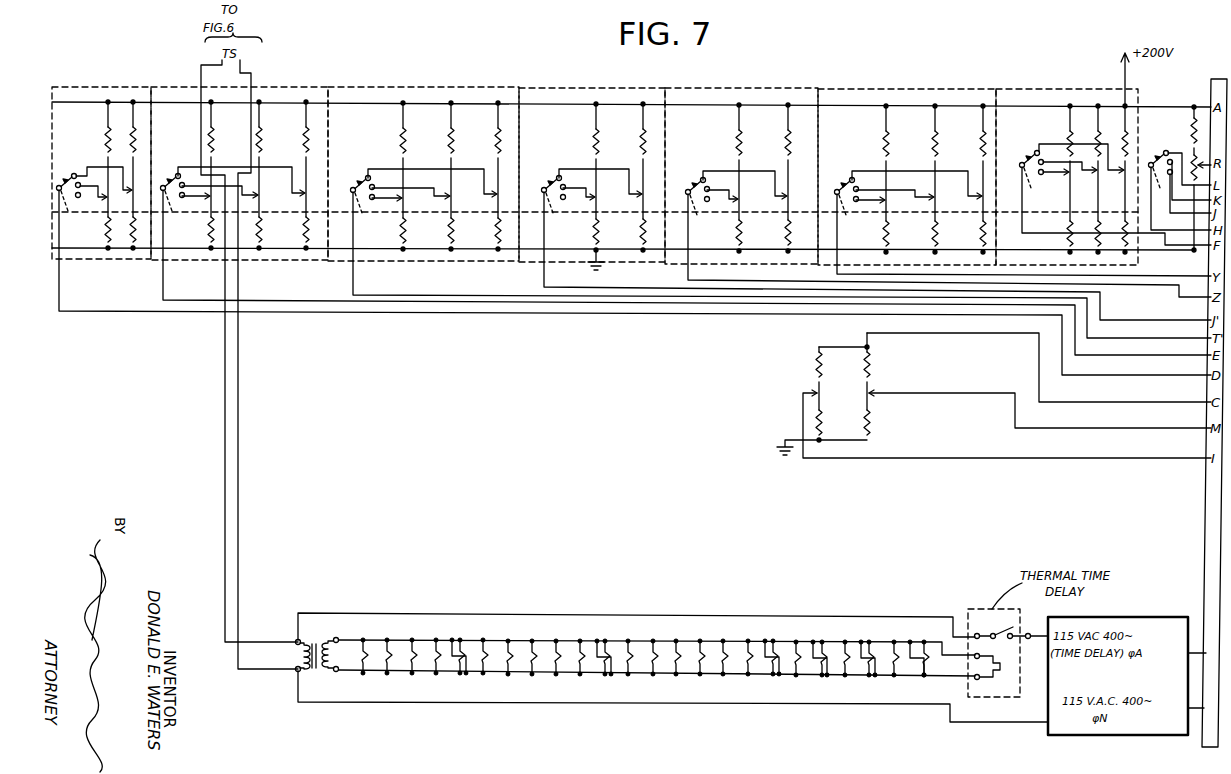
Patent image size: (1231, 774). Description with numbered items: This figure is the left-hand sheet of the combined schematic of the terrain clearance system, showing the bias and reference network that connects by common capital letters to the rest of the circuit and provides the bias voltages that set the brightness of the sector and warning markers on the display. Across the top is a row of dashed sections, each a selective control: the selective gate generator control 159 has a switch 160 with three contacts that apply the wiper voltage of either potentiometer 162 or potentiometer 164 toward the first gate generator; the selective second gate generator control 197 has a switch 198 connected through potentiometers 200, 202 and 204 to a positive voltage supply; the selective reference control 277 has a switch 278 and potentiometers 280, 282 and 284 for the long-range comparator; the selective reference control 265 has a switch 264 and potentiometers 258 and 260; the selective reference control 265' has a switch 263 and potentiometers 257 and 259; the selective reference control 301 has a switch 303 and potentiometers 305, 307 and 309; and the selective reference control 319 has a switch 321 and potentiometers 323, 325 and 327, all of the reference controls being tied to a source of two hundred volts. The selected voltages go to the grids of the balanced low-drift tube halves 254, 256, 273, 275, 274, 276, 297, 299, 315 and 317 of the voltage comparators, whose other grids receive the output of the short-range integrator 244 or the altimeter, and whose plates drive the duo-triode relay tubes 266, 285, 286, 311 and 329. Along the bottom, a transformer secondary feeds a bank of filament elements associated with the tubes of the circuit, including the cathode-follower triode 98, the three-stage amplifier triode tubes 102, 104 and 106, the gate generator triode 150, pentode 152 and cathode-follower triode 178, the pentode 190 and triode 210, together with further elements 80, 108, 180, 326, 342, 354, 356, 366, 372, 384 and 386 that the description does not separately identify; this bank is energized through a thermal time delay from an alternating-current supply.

The selective gate generator control 159 is at (80, 88).
The selective second gate generator control 197 is at (283, 86).
The selective reference control 277 is at (405, 88).
The selective reference control 265 is at (592, 161).
The selective reference control 265' is at (741, 162).
The selective reference control 301 is at (935, 89).
The selective reference control 319 is at (1062, 89).
The switch 160 is at (60, 185).
The potentiometer 162 is at (103, 200).
The potentiometer 164 is at (130, 200).
The switch 198 is at (162, 185).
The potentiometer 200 is at (212, 192).
The potentiometer 202 is at (258, 194).
The potentiometer 204 is at (308, 190).
The switch 278 is at (354, 187).
The potentiometer 280 is at (403, 203).
The potentiometer 282 is at (451, 203).
The potentiometer 284 is at (500, 196).
The switch 264 is at (548, 185).
The potentiometer 258 is at (597, 205).
The potentiometer 260 is at (645, 190).
The switch 263 is at (692, 188).
The potentiometer 257 is at (740, 190).
The potentiometer 259 is at (787, 215).
The switch 303 is at (840, 188).
The potentiometer 305 is at (887, 205).
The potentiometer 307 is at (936, 192).
The potentiometer 309 is at (982, 215).
The switch 321 is at (1030, 155).
The potentiometer 323 is at (1072, 185).
The potentiometer 325 is at (1098, 178).
The potentiometer 327 is at (1153, 162).
The heater 80 is at (343, 632).
The triode 98 is at (363, 650).
The triode tube 102 is at (387, 668).
The triode tube 104 is at (388, 665).
The triode tube 106 is at (435, 632).
The heater 108 is at (412, 650).
The duo-triode relay tube 286 is at (437, 665).
The triode 150 is at (459, 646).
The triode 178 is at (462, 650).
The tube half 274 is at (481, 680).
The tube half 276 is at (463, 660).
The pentode 152 is at (485, 665).
The heater 180 is at (532, 647).
The triode 210 is at (510, 651).
The pentode 190 is at (535, 666).
The duo-triode relay tube 266 is at (558, 651).
The tube half 254 is at (590, 669).
The tube half 256 is at (581, 666).
The heater 356 is at (635, 647).
The heater 366 is at (607, 651).
The heater 354 is at (630, 666).
The heater 372 is at (686, 634).
The heater 386 is at (655, 651).
The heater 384 is at (678, 651).
The heater 326 is at (702, 666).
The short-range integrator 244 is at (725, 651).
The heater 342 is at (750, 666).
The duo-triode relay tube 285 is at (775, 651).
The tube half 273 is at (853, 635).
The tube half 275 is at (824, 652).
The duo-triode relay tube 329 is at (845, 665).
The tube half 315 is at (865, 670).
The tube half 317 is at (870, 667).
The duo-triode relay tube 311 is at (896, 652).
The tube half 297 is at (922, 669).
The tube half 299 is at (925, 667).